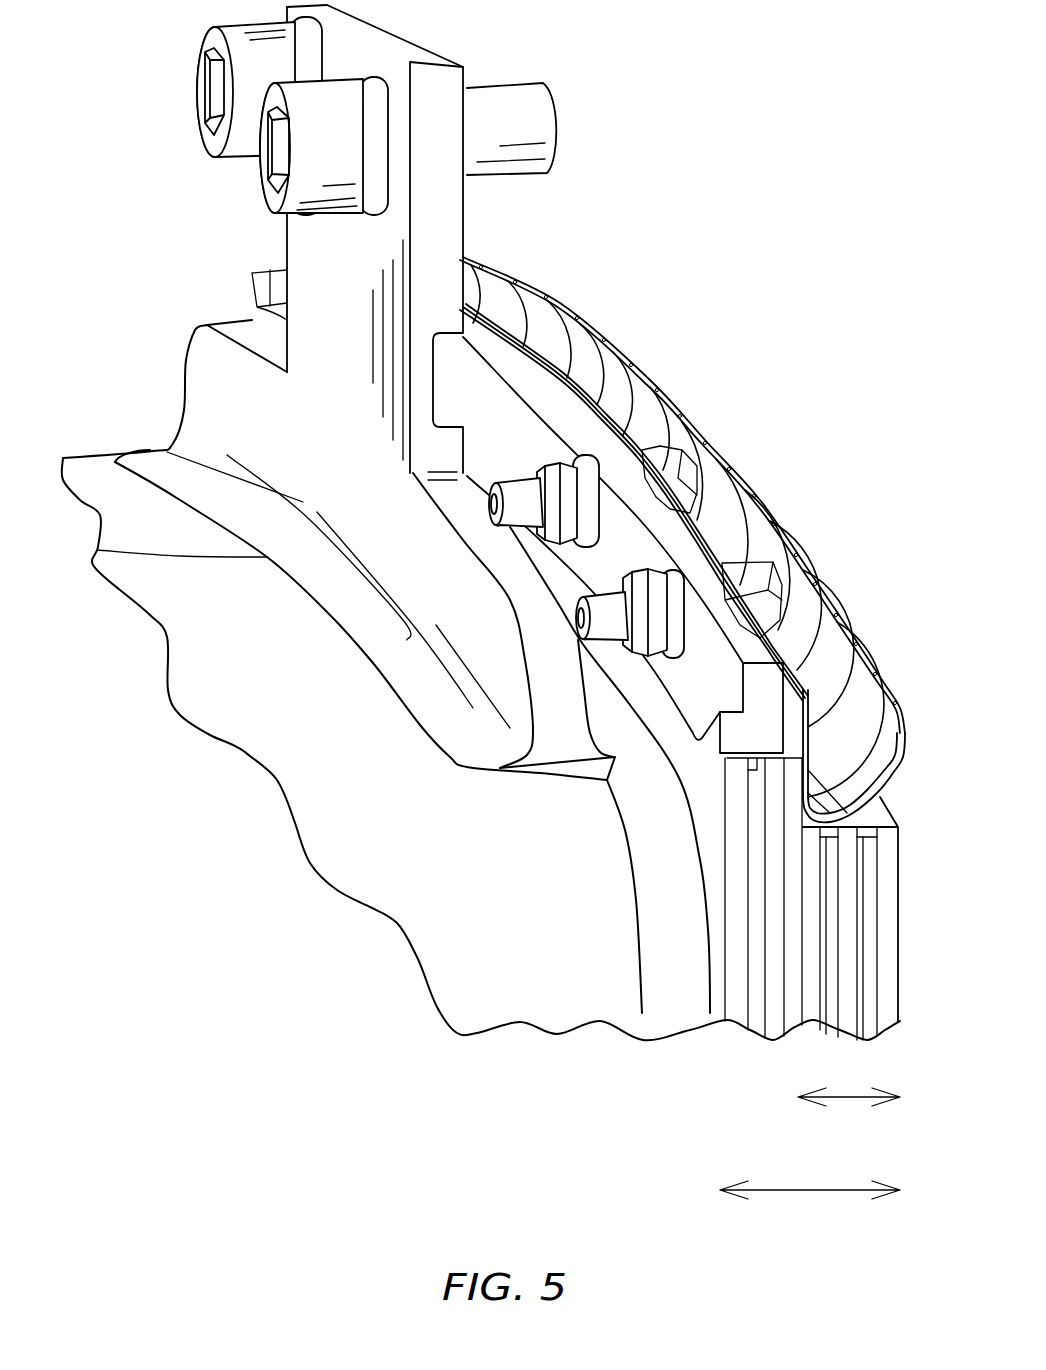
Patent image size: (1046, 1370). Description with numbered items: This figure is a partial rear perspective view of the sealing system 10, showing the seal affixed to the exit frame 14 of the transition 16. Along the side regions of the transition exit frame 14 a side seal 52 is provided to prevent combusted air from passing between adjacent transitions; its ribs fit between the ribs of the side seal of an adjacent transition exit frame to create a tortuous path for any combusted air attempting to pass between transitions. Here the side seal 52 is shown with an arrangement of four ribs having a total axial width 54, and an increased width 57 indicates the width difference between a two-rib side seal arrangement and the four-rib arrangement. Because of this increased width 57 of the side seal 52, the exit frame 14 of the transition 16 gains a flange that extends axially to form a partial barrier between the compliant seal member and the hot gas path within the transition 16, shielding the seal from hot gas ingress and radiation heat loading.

The system 10 is at (860, 577).
The exit frame 14 is at (149, 320).
The transition 16 is at (487, 897).
The side seal 52 is at (757, 975).
The total axial width 54 is at (810, 1190).
The increased width 57 is at (850, 1097).